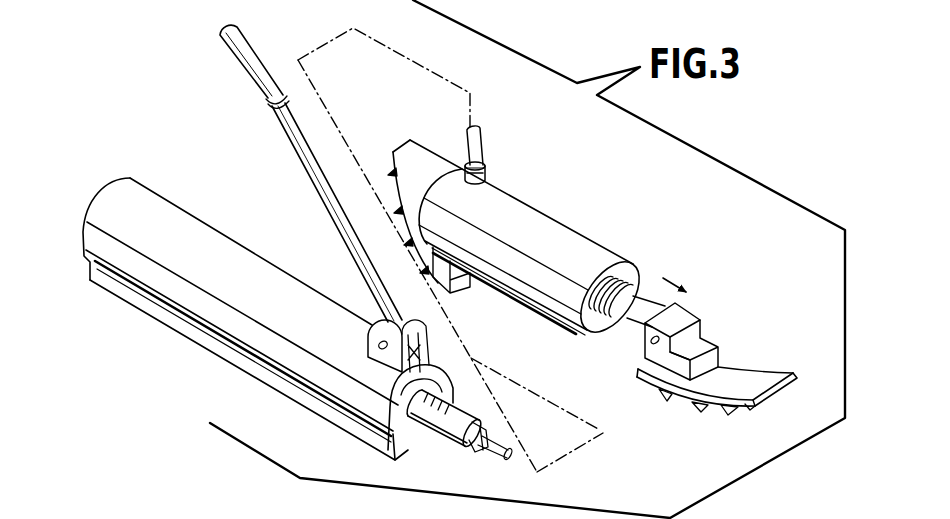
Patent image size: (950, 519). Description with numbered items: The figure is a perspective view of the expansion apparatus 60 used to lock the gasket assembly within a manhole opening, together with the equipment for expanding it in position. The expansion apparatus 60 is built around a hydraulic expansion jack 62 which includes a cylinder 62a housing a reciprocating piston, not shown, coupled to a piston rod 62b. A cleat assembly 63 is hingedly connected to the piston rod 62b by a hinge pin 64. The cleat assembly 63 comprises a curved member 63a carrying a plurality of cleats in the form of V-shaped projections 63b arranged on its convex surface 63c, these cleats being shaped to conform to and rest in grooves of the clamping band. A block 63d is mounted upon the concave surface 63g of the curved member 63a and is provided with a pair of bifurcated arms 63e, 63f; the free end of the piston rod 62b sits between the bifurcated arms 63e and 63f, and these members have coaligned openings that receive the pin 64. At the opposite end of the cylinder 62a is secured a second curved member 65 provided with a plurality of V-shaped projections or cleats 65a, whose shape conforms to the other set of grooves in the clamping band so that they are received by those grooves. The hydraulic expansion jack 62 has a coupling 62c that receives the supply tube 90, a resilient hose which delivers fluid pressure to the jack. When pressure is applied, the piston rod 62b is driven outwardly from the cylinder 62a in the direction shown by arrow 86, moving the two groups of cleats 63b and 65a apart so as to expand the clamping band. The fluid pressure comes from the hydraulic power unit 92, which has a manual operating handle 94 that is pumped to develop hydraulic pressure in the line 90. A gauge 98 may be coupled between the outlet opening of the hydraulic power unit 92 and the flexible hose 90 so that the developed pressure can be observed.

The expansion apparatus 60 is at (645, 492).
The expansion jack 62 is at (554, 239).
The cylinder 62a is at (607, 238).
The piston rod 62b is at (647, 291).
The coupling 62c is at (483, 168).
The cleat assembly 63 is at (718, 364).
The curved member 63a is at (743, 372).
The V-shaped projections 63b is at (724, 412).
The convex surface 63c is at (750, 403).
The block 63d is at (717, 347).
The bifurcated arm 63e is at (640, 359).
The bifurcated arm 63f is at (698, 307).
The concave surface 63g is at (775, 368).
The hinge pin 64 is at (650, 341).
The curved member 65 is at (393, 185).
The V-shaped projections or cleats 65a is at (401, 208).
The arrow 86 is at (677, 281).
The supply tube 90 is at (478, 151).
The hydraulic power unit 92 is at (188, 373).
The manual operating handle 94 is at (297, 164).
The gauge 98 is at (446, 424).